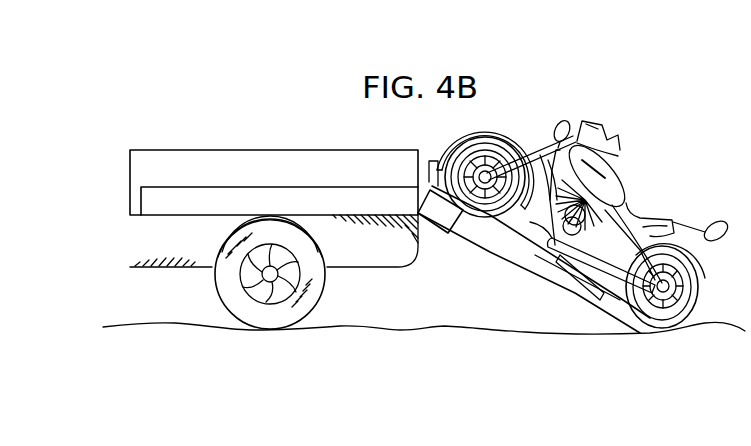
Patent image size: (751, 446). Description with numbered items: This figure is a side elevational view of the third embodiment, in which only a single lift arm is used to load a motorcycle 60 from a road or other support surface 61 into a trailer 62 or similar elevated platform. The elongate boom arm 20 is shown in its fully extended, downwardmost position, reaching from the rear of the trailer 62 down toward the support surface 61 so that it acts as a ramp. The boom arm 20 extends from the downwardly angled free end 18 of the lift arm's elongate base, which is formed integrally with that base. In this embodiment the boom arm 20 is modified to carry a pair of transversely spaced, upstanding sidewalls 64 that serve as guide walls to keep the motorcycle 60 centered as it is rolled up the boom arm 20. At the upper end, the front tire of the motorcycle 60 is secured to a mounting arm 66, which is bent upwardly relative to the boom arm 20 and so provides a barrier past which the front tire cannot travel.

The downwardly angled free end 18 is at (440, 227).
The boom arm 20 is at (505, 263).
The motorcycle 60 is at (648, 186).
The support surface 61 is at (401, 329).
The trailer 62 is at (266, 140).
The upstanding sidewalls 64 is at (508, 228).
The mounting arm 66 is at (426, 180).